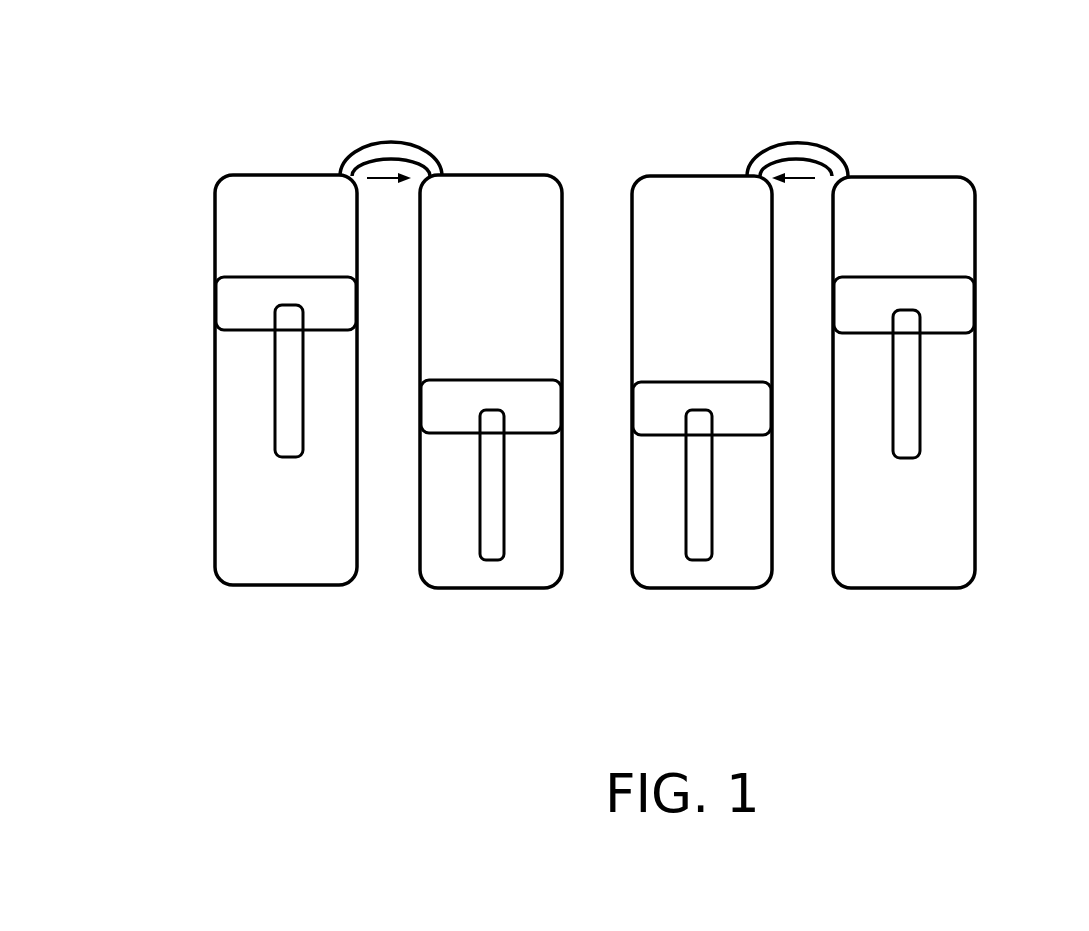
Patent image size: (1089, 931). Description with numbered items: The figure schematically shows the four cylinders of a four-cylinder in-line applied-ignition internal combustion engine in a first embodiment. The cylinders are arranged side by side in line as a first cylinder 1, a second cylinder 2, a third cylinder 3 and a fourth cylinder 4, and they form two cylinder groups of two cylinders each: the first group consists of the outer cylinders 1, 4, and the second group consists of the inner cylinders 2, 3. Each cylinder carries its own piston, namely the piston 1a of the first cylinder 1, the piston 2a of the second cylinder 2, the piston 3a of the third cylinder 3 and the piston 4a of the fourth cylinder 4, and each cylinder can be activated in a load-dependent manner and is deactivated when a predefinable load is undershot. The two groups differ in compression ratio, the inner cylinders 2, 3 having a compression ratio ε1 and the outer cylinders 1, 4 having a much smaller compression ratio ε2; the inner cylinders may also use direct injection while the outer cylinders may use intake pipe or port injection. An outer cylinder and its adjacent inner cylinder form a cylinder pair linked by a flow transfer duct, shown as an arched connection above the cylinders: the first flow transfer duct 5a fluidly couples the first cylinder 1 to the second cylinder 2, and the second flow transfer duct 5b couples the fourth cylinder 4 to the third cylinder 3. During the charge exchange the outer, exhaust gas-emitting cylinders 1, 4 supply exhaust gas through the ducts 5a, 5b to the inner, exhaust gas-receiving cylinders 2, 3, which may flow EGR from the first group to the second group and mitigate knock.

The first cylinder 1 is at (285, 148).
The piston 1a is at (248, 300).
The second cylinder 2 is at (506, 148).
The piston 2a is at (455, 400).
The third cylinder 3 is at (708, 148).
The piston 3a is at (735, 420).
The fourth cylinder 4 is at (913, 148).
The piston 4a is at (945, 308).
The first flow transfer duct 5a is at (393, 141).
The second flow transfer duct 5b is at (790, 143).